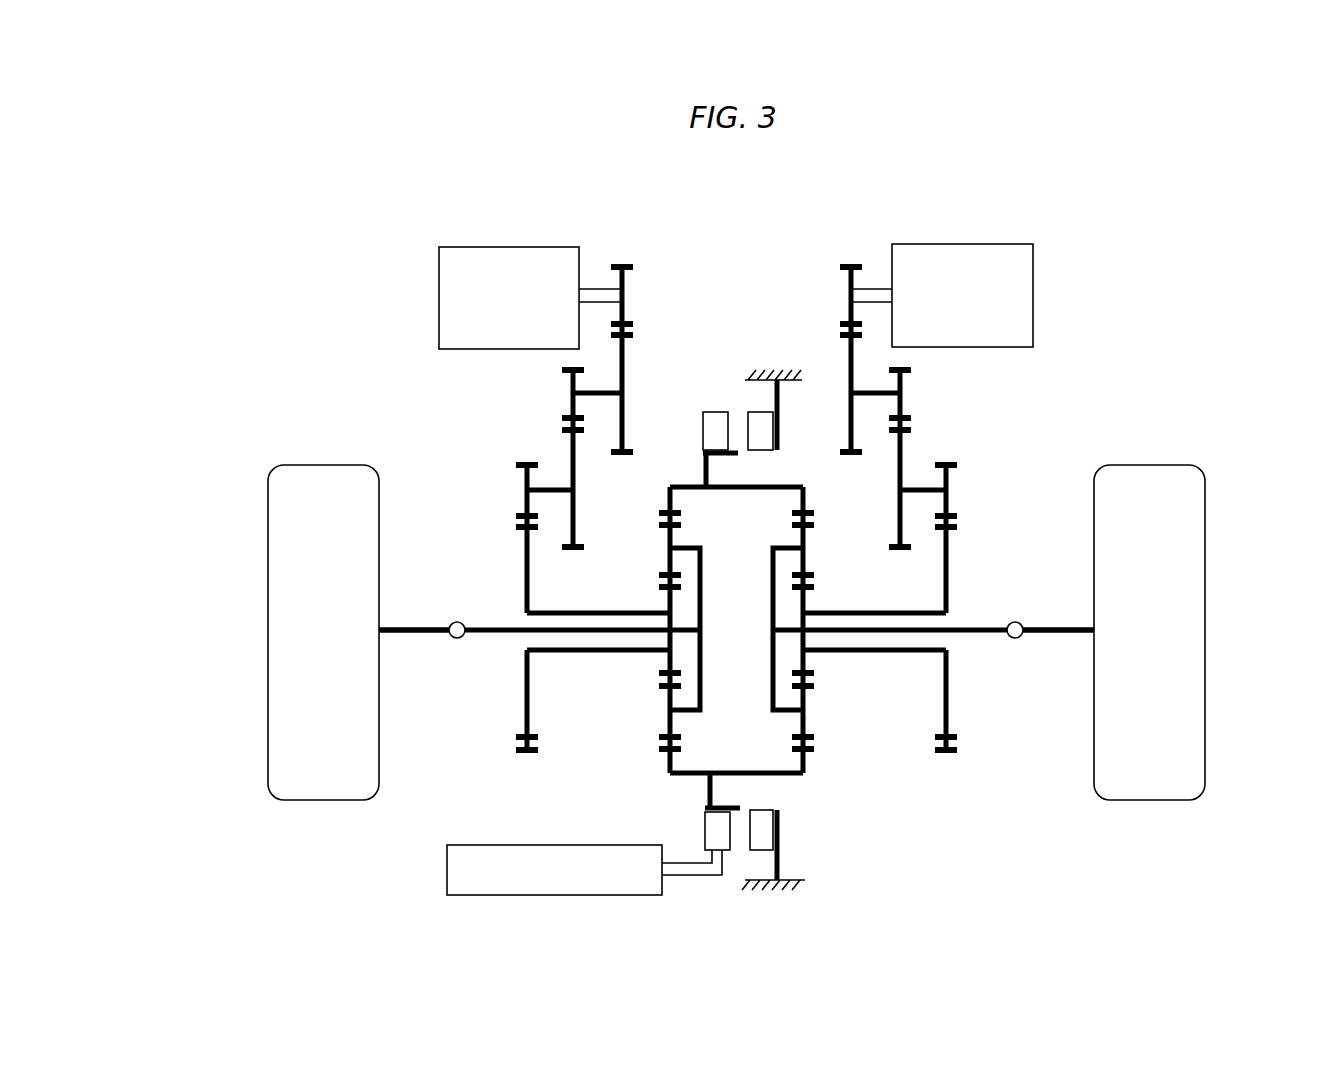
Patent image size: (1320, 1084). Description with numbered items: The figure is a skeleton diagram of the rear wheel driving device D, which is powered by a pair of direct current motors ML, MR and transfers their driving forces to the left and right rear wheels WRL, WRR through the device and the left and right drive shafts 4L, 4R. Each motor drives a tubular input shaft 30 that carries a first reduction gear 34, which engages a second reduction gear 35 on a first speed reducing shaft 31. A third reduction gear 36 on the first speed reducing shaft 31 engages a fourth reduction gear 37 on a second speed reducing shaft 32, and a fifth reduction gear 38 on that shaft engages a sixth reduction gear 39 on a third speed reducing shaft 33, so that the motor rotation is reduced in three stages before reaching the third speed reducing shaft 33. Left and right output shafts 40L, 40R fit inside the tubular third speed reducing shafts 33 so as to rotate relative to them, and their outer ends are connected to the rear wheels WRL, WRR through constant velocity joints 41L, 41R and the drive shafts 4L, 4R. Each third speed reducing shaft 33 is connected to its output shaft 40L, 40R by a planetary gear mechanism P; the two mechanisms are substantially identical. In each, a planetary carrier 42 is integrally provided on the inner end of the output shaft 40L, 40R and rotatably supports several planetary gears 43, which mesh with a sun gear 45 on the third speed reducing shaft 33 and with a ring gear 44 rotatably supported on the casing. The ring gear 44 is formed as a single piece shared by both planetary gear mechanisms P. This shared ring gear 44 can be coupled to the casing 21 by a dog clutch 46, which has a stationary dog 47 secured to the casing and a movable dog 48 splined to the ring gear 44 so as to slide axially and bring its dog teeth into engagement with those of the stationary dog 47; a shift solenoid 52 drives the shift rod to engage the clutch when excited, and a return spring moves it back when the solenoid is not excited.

The direct current motor ML is at (520, 313).
The direct current motor MR is at (940, 311).
The input shaft 30 is at (597, 287).
The first reduction gear 34 is at (630, 267).
The second reduction gear 35 is at (633, 335).
The third reduction gear 36 is at (562, 370).
The first speed reducing shaft 31 is at (599, 398).
The fourth reduction gear 37 is at (563, 430).
The fifth reduction gear 38 is at (517, 468).
The second speed reducing shaft 32 is at (552, 495).
The sixth reduction gear 39 is at (516, 531).
The third speed reducing shaft 33 is at (612, 610).
The left output shaft 40L is at (487, 640).
The right output shaft 40R is at (985, 640).
The left drive shaft 4L is at (412, 640).
The right drive shaft 4R is at (1062, 640).
The constant velocity joint 41L is at (457, 621).
The constant velocity joint 41R is at (1016, 621).
The left rear wheel WRL is at (300, 800).
The right rear wheel WRR is at (1172, 800).
The planetary gear mechanism P is at (652, 758).
The planetary carrier 42 is at (703, 575).
The ring gear 44 is at (662, 510).
The planetary gear 43 is at (790, 520).
The sun gear 45 is at (660, 675).
The rear wheel driving device D is at (715, 350).
The movable dog 48 is at (710, 830).
The stationary dog 47 is at (760, 816).
The casing 21 is at (797, 878).
The dog clutch 46 is at (730, 860).
The shift solenoid 52 is at (568, 885).